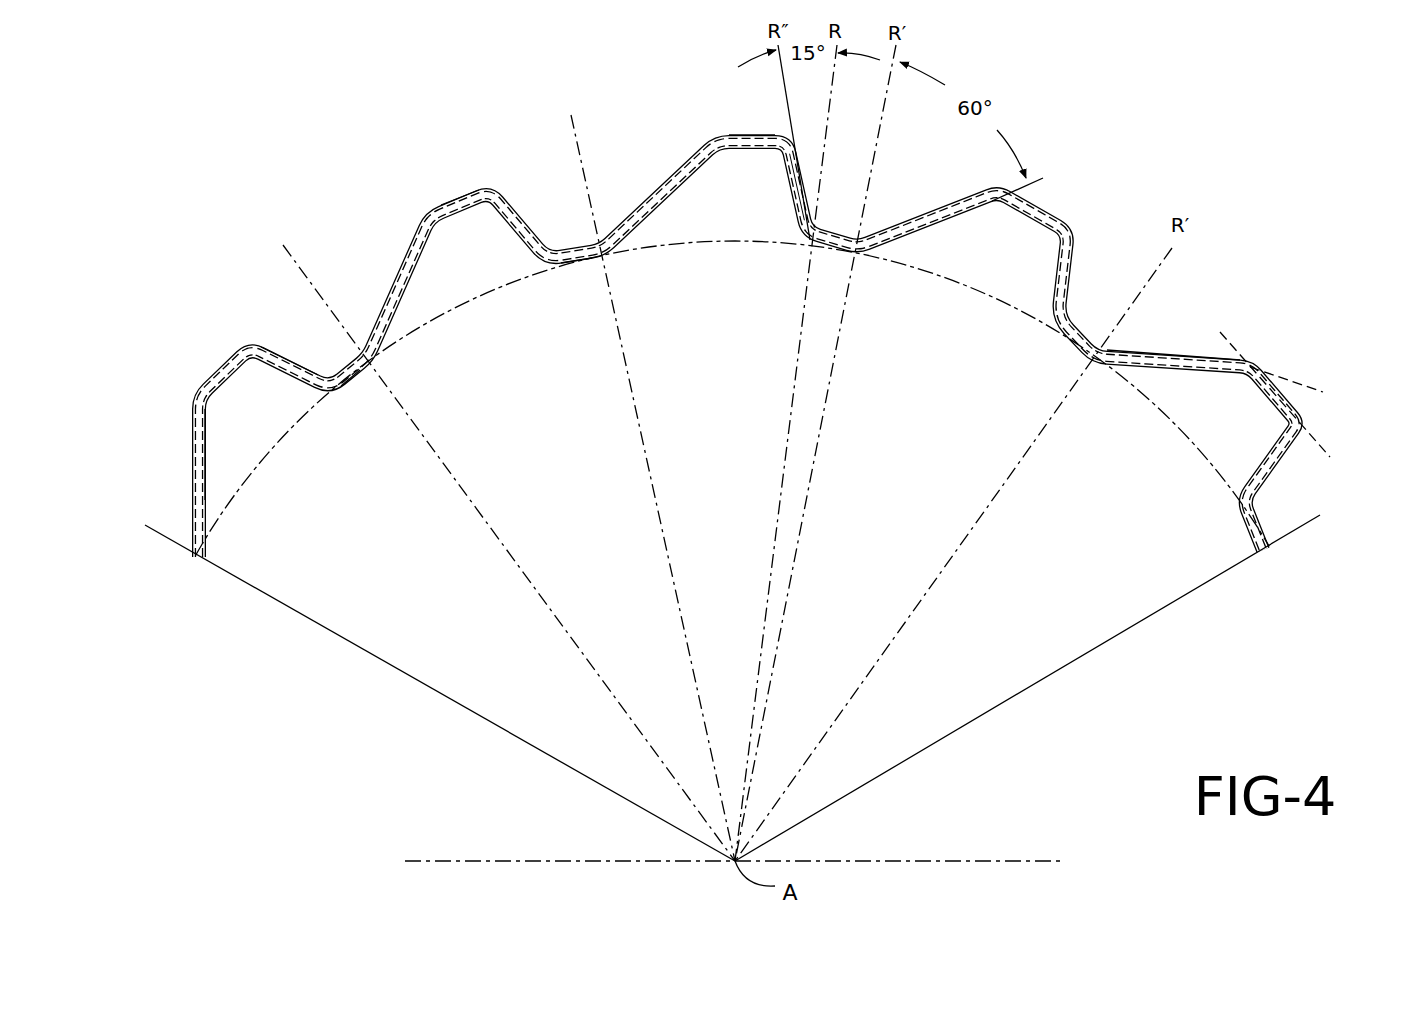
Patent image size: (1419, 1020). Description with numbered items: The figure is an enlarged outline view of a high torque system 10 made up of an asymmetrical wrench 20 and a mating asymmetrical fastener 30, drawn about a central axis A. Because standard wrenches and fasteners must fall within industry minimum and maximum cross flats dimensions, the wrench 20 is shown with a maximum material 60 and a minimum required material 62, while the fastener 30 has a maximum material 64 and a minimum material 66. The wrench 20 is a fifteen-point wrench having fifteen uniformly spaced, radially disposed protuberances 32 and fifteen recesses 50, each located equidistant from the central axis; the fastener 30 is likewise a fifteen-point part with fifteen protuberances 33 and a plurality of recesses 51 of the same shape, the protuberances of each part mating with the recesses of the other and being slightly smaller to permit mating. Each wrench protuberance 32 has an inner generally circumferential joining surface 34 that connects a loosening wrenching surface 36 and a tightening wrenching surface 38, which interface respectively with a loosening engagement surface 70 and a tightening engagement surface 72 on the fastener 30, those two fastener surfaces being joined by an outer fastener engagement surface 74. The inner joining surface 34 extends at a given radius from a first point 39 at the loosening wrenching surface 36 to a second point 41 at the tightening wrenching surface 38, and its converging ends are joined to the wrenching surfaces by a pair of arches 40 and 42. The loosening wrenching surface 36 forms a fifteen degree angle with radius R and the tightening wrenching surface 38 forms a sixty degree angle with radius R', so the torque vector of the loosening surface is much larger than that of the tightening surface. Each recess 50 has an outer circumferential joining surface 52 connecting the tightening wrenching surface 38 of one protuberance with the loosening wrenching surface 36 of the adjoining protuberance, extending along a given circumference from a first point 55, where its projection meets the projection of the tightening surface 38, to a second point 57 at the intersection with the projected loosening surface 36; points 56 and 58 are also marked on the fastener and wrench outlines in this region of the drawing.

The high torque system 10 is at (1252, 172).
The asymmetrical wrench 20 is at (307, 177).
The asymmetrical fastener 30 is at (470, 370).
The protuberance 32 is at (293, 335).
The protuberance 33 is at (230, 420).
The inner generally circumferential joining surface 34 is at (845, 253).
The loosening wrenching surface 36 is at (813, 172).
The tightening wrenching surface 38 is at (940, 210).
The first point 39 is at (813, 233).
The arch 40 is at (814, 234).
The second point 41 is at (877, 252).
The arch 42 is at (860, 243).
The recess 50 is at (180, 349).
The recess 51 is at (350, 415).
The outer circumferential joining surface 52 is at (1040, 208).
The first point 55 is at (1250, 362).
The tip 56 is at (1000, 193).
The second point 57 is at (1302, 425).
The flank face 58 is at (1078, 228).
The maximum material 60 is at (193, 501).
The minimum required material 62 is at (191, 436).
The maximum material 64 is at (202, 457).
The minimum material 66 is at (207, 497).
The loosening engagement surface 70 is at (647, 222).
The tightening engagement surface 72 is at (789, 205).
The outer fastener engagement surface 74 is at (740, 153).